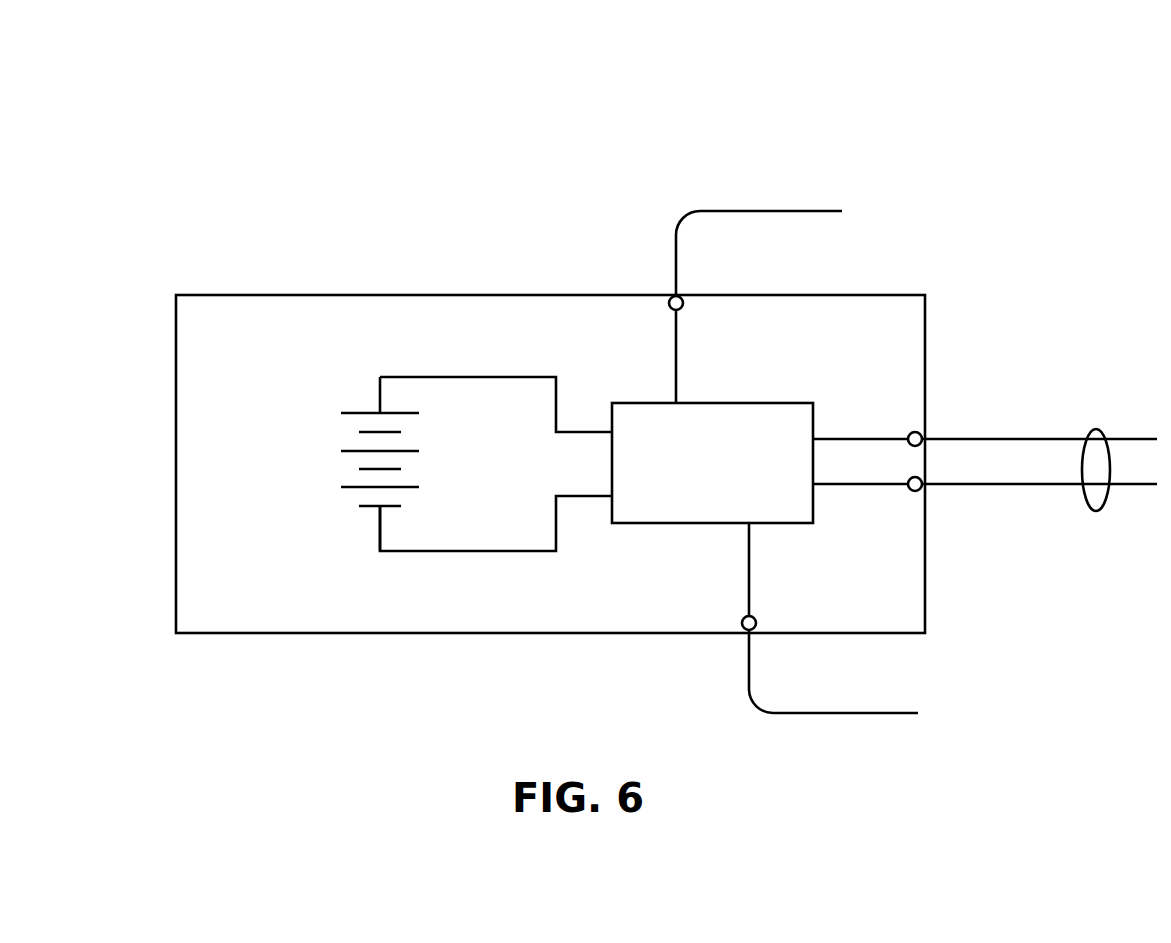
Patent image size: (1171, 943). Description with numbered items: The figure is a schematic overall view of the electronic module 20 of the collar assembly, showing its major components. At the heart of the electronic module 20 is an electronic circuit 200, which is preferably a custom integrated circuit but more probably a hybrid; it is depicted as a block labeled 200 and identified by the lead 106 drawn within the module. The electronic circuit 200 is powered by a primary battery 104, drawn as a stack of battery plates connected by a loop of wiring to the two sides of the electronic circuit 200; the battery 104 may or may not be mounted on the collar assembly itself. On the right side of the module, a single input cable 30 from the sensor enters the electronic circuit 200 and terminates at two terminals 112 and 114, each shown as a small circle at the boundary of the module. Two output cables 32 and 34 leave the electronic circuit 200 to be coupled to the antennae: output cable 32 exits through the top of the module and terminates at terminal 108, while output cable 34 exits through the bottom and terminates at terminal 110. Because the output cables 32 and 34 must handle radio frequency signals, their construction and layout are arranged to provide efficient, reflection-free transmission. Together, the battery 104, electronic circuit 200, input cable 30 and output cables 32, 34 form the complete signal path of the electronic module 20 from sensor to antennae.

The electronic module 20 is at (988, 150).
The input cable 30 is at (1090, 428).
The output cable 32 is at (722, 211).
The output cable 34 is at (820, 713).
The primary battery 104 is at (362, 405).
The control circuit block 106 is at (654, 546).
The terminal 108 is at (669, 300).
The terminal 110 is at (755, 627).
The terminal 112 is at (920, 432).
The terminal 114 is at (920, 492).
The electronic circuit 200 is at (689, 474).